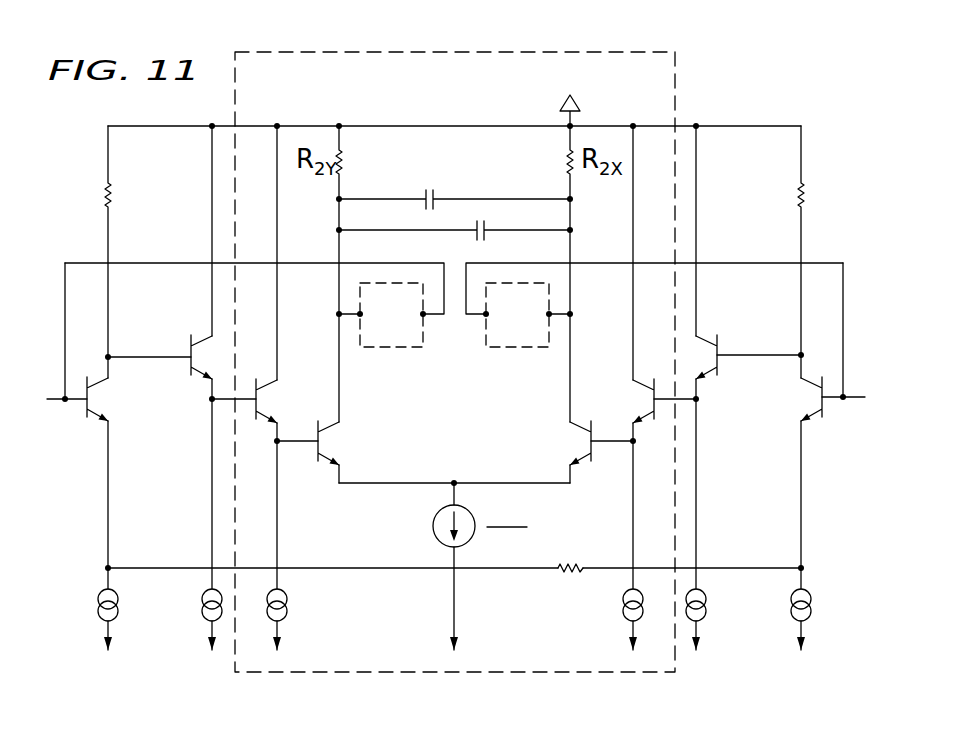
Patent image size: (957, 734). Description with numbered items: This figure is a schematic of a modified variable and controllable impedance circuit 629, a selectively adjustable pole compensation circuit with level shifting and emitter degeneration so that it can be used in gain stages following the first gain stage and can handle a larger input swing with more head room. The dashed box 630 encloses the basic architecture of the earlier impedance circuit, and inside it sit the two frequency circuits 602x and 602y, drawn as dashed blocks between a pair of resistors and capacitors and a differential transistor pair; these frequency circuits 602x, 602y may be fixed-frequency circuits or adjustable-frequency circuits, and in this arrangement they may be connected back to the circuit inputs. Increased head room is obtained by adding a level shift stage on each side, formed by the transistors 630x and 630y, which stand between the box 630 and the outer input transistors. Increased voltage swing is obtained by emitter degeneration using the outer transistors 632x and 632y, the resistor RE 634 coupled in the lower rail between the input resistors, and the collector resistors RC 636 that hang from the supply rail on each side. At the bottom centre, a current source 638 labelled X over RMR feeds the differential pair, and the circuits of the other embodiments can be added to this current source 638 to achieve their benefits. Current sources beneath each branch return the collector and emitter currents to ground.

The differential amplifier circuit 629 is at (812, 68).
The impedance circuit box 630 is at (678, 74).
The level shift transistor 630x is at (716, 372).
The level shift transistor 630y is at (192, 371).
The emitter degeneration transistor 632x is at (820, 414).
The emitter degeneration transistor 632y is at (86, 414).
The resistor RE 634 is at (576, 564).
The resistor RC 636 is at (118, 193).
The current source 638 is at (433, 527).
The frequency circuit 602x is at (402, 348).
The frequency circuit 602y is at (505, 348).